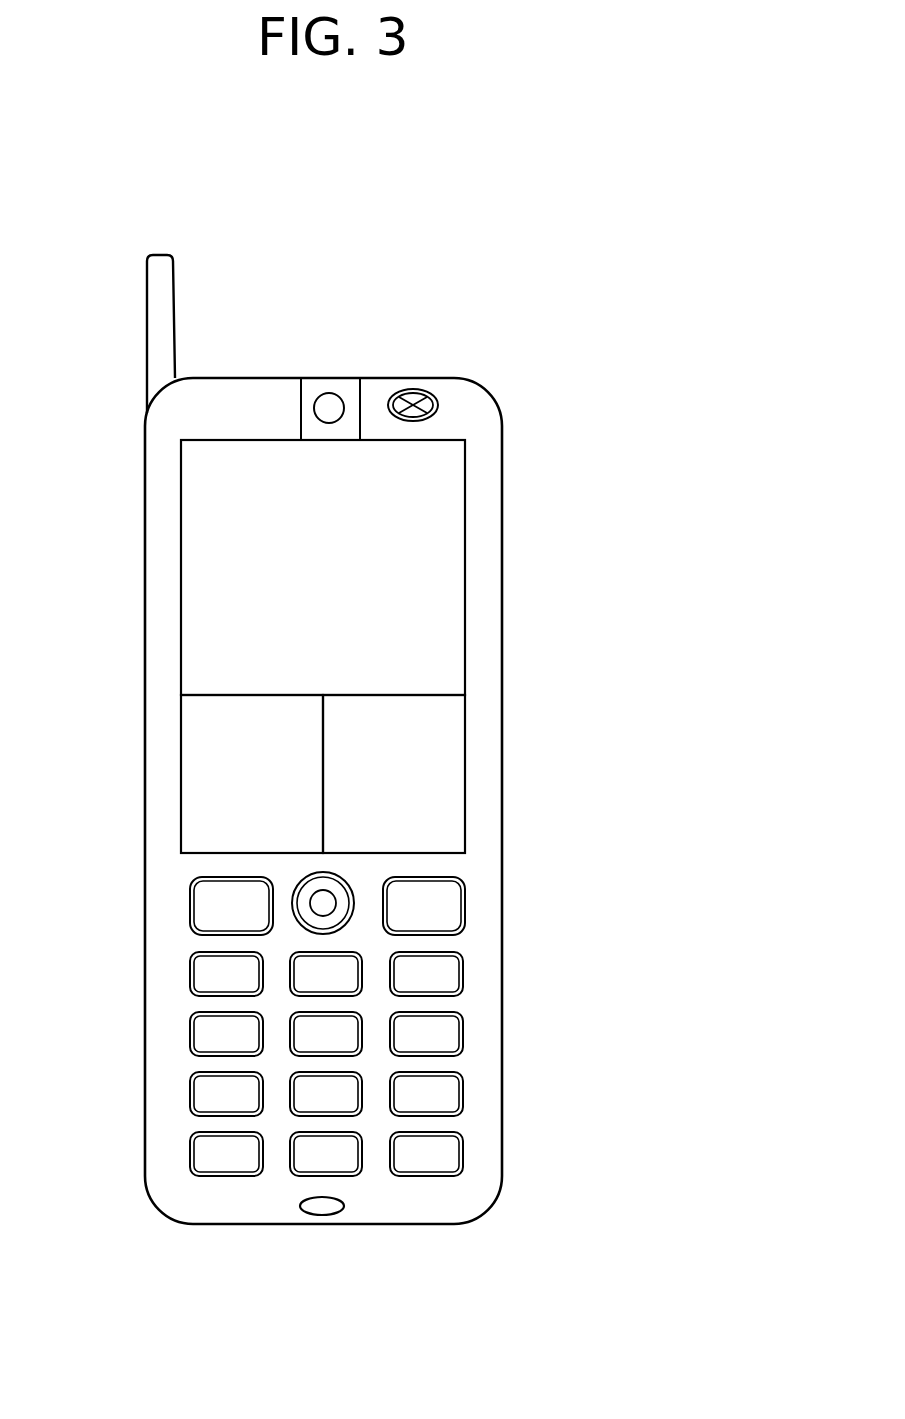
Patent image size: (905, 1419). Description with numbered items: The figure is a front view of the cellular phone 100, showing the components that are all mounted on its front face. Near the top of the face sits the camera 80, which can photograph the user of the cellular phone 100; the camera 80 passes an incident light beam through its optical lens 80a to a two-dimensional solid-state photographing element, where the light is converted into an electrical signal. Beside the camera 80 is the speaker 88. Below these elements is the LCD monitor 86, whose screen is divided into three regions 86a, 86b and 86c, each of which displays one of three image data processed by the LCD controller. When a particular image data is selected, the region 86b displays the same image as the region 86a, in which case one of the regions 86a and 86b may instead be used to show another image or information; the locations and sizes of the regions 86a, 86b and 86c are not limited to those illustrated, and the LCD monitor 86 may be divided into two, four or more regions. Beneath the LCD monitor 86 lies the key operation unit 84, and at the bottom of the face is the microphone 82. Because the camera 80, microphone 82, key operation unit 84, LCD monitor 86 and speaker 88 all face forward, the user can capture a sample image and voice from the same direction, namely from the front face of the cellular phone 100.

The cellular phone 100 is at (442, 262).
The camera 80 is at (342, 388).
The optical lens 80a is at (326, 398).
The speaker 88 is at (413, 388).
The LCD monitor 86 is at (321, 689).
The region 86c is at (195, 535).
The region 86a is at (195, 760).
The region 86b is at (464, 820).
The key operation unit 84 is at (132, 852).
The microphone 82 is at (323, 1207).